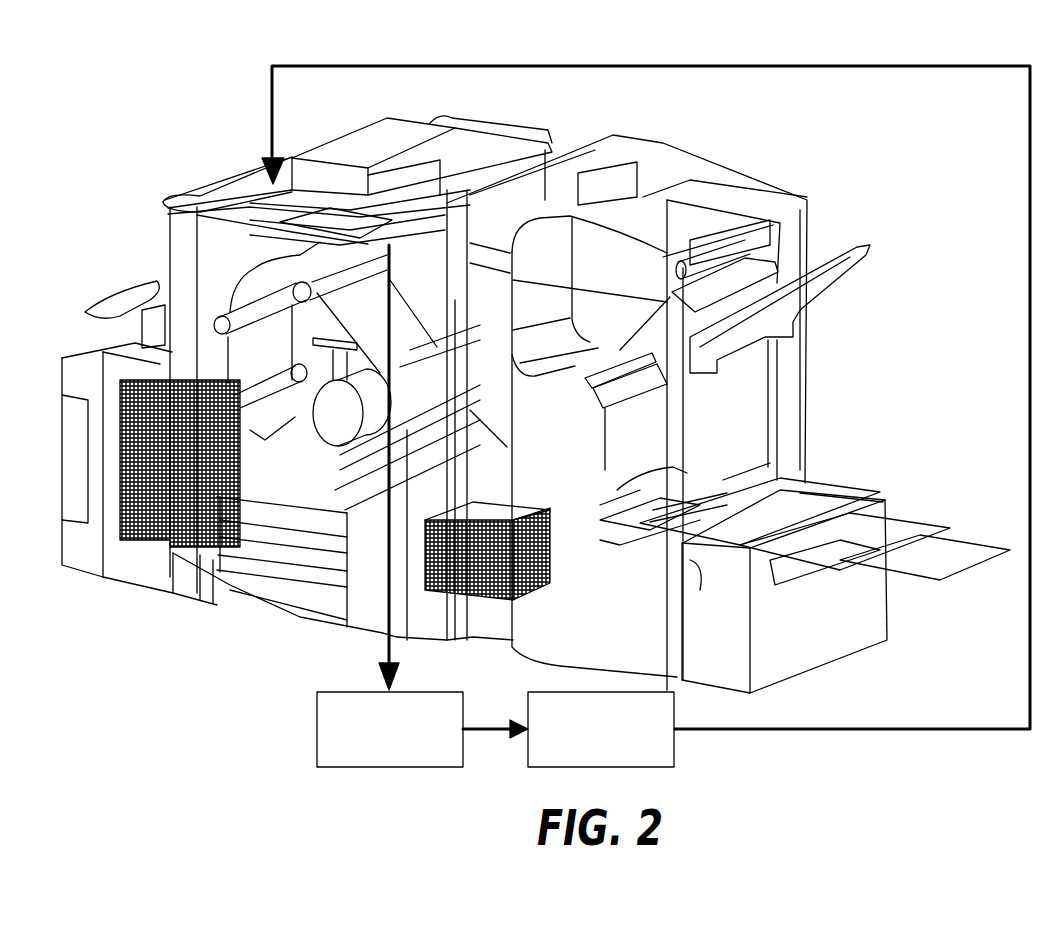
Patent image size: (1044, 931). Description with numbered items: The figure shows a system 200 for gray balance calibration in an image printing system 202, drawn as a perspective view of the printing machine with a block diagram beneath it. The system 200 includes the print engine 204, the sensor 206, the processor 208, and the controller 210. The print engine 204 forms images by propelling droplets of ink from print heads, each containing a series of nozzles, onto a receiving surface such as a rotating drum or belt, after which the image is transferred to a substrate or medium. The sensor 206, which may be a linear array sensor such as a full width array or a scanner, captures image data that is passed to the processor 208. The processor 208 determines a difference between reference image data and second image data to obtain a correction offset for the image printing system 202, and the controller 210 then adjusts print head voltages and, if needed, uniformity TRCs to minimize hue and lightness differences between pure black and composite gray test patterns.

The system 200 is at (242, 106).
The image printing system 202 is at (222, 166).
The print engine 204 is at (234, 500).
The sensor 206 is at (467, 140).
The processor 208 is at (392, 768).
The controller 210 is at (602, 768).